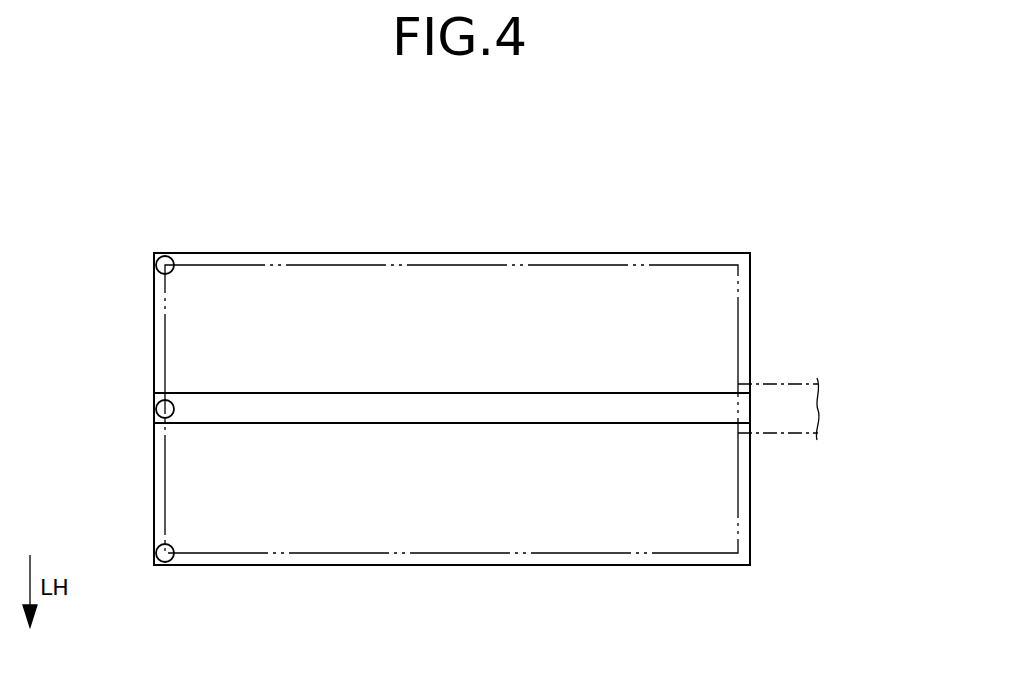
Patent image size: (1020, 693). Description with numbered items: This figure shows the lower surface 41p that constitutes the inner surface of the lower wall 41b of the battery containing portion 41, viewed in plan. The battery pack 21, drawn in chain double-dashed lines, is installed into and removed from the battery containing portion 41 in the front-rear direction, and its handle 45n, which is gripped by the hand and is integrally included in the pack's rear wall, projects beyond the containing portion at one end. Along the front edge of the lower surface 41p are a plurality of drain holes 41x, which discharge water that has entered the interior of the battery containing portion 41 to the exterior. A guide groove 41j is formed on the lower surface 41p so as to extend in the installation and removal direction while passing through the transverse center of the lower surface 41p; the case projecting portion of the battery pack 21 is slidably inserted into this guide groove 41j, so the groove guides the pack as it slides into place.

The battery containing portion 41 is at (267, 253).
The lower wall 41b is at (343, 303).
The lower surface 41p is at (613, 292).
The guide groove 41j is at (423, 423).
The drain holes 41x is at (156, 262).
The handle 45n is at (800, 436).
The battery pack 21 is at (738, 498).